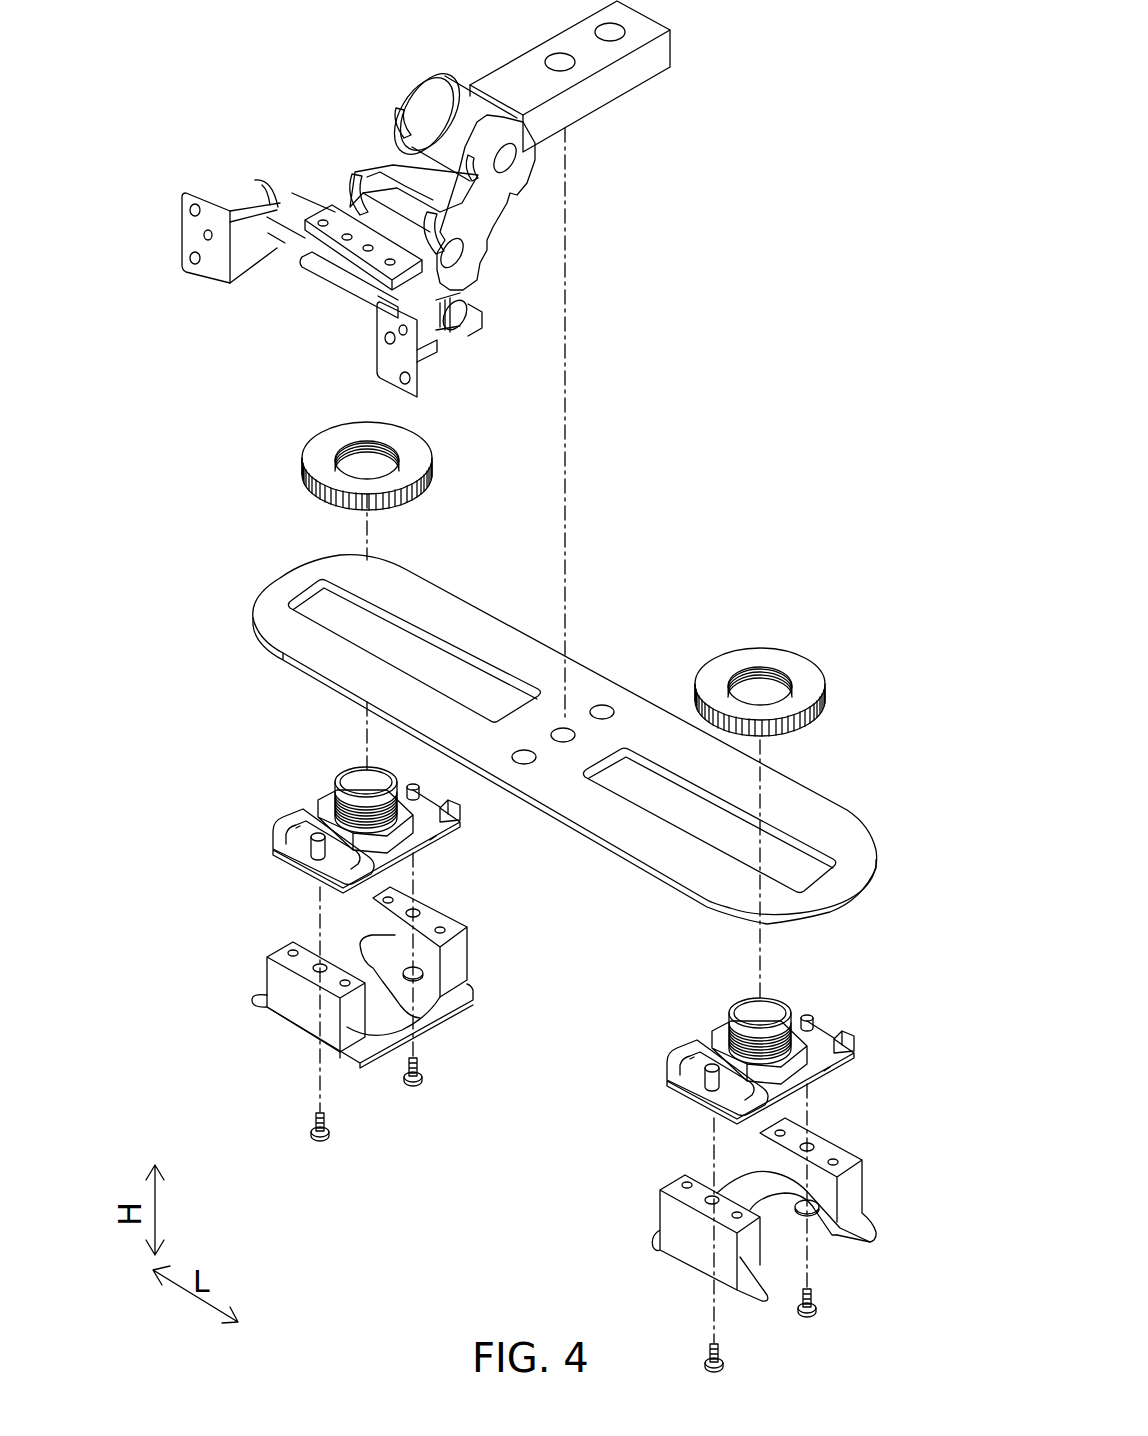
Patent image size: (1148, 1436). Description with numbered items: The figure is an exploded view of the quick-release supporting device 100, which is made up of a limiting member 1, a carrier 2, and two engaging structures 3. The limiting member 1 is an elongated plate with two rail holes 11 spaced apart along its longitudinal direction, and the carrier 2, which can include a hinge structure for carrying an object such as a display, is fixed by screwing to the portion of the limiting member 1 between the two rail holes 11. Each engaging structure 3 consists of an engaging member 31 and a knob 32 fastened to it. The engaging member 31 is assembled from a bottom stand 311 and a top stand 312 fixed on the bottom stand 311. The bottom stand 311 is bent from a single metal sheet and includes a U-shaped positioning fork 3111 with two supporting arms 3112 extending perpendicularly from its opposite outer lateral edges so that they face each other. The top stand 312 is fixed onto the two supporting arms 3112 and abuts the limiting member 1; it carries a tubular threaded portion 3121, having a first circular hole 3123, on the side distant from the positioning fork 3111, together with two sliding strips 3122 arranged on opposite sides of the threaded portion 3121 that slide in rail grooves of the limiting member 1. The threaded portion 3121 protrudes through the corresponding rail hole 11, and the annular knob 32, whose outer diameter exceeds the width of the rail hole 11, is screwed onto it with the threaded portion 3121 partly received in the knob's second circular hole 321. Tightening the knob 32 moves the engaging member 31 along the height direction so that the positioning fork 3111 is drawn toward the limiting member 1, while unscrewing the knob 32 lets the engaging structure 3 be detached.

The quick-release supporting device 100 is at (234, 38).
The limiting member 1 is at (286, 579).
The rail hole 11 is at (428, 626).
The carrier 2 is at (521, 62).
The engaging structure 3 is at (858, 8).
The engaging member 31 is at (172, 832).
The bottom stand 311 is at (288, 955).
The positioning fork 3111 is at (427, 1012).
The supporting arm 3112 is at (455, 958).
The top stand 312 is at (273, 836).
The threaded portion 3121 is at (333, 806).
The sliding strip 3122 is at (296, 828).
The first circular hole 3123 is at (366, 771).
The knob 32 is at (315, 446).
The second circular hole 321 is at (398, 450).